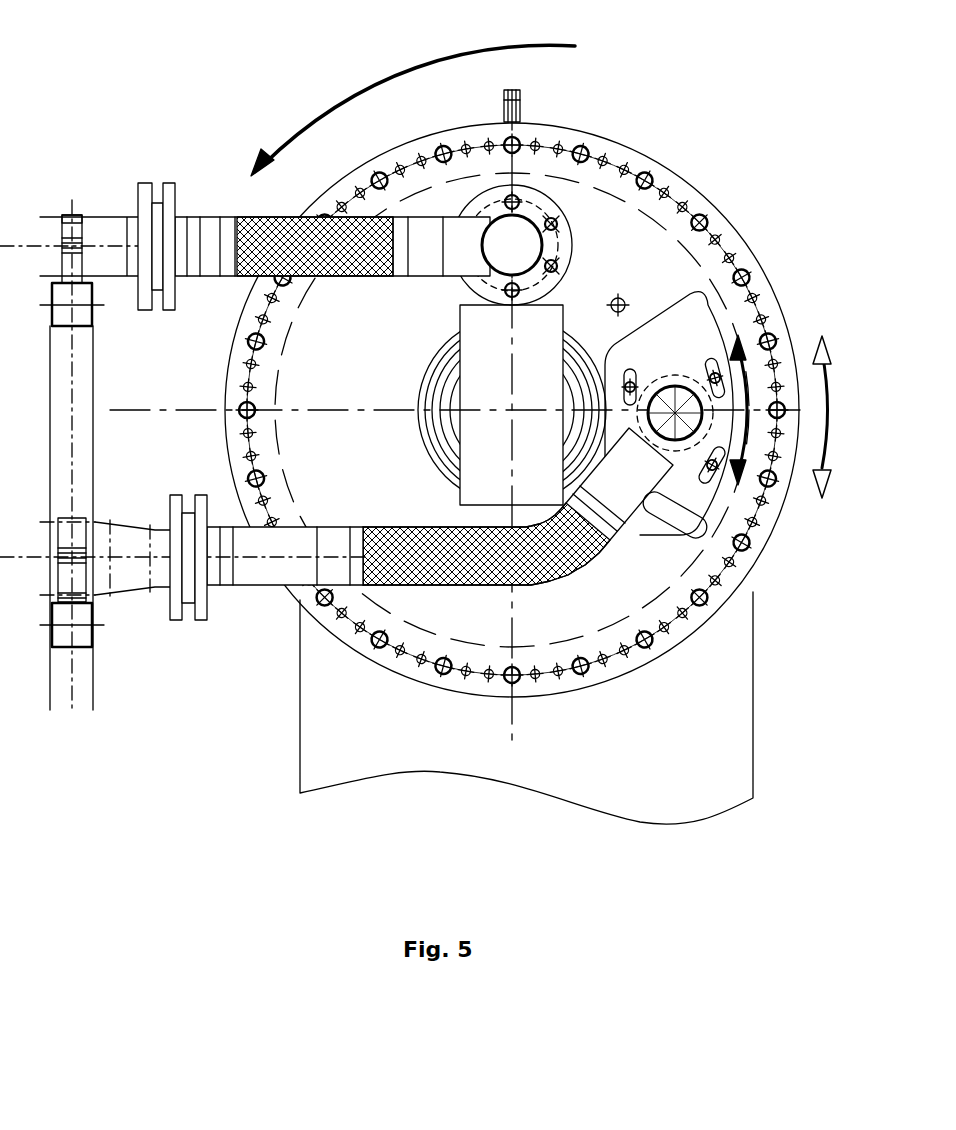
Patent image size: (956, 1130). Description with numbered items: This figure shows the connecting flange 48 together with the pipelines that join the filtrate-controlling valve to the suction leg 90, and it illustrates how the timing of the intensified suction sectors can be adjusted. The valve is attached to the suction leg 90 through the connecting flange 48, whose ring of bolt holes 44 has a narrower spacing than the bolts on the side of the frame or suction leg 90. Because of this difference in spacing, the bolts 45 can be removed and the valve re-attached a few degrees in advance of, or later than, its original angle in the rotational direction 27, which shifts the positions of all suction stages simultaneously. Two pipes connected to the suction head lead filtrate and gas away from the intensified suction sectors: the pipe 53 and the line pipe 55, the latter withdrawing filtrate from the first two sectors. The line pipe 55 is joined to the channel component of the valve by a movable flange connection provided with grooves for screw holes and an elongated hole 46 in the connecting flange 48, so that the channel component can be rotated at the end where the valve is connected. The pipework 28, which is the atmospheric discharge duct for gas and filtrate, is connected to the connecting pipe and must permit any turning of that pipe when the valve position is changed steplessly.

The rotational direction 27 is at (318, 106).
The atmospheric discharge duct 28 is at (545, 345).
The bolt holes 44 is at (642, 165).
The bolts 45 is at (601, 142).
The elongated hole 46 is at (688, 335).
The connecting flange 48 is at (700, 300).
The pipe 53 is at (470, 230).
The line pipe 55 is at (700, 530).
The suction leg 90 is at (753, 668).